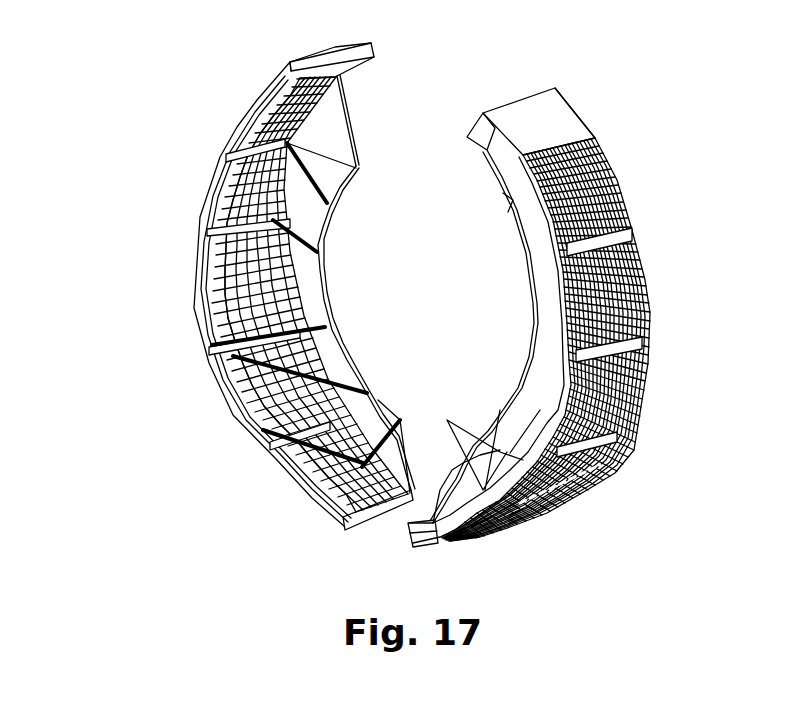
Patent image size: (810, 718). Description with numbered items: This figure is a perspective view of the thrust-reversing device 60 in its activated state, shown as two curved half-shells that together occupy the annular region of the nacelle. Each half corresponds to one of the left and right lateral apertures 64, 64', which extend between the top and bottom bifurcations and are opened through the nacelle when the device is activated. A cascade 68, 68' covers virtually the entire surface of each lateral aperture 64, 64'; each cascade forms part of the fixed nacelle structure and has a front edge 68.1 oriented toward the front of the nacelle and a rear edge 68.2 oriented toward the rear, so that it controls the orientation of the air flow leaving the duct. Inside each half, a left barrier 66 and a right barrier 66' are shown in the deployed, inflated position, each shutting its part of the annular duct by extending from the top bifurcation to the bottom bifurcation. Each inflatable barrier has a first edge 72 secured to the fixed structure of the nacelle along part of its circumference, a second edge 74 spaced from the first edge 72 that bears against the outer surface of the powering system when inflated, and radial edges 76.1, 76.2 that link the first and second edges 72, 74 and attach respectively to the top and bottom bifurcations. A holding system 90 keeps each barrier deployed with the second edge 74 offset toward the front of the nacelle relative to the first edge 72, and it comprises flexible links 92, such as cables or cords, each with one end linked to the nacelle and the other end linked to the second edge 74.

The thrust-reversing device 60 is at (135, 284).
The left lateral aperture 64 is at (278, 285).
The right lateral aperture 64' is at (584, 315).
The left barrier 66 is at (270, 294).
The right barrier 66' is at (486, 414).
The cascade 68 is at (239, 295).
The cascade 68' is at (577, 339).
The front edge 68.1 is at (200, 185).
The rear edge 68.2 is at (372, 44).
The first edge 72 is at (207, 305).
The second edge 74 is at (327, 293).
The first radial edge 76.1 is at (345, 107).
The second radial edge 76.2 is at (395, 440).
The holding system 90 is at (337, 140).
The flexible link 92 is at (292, 190).